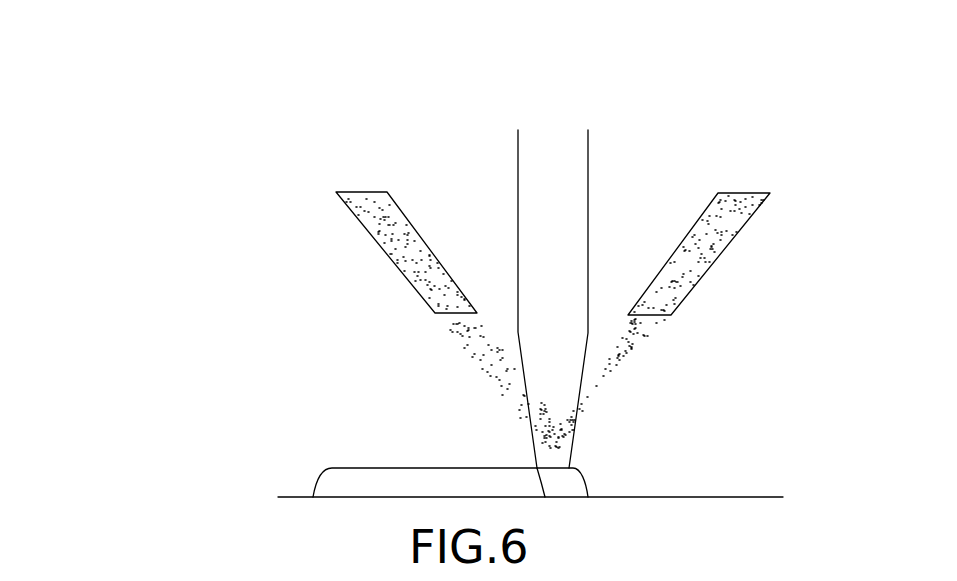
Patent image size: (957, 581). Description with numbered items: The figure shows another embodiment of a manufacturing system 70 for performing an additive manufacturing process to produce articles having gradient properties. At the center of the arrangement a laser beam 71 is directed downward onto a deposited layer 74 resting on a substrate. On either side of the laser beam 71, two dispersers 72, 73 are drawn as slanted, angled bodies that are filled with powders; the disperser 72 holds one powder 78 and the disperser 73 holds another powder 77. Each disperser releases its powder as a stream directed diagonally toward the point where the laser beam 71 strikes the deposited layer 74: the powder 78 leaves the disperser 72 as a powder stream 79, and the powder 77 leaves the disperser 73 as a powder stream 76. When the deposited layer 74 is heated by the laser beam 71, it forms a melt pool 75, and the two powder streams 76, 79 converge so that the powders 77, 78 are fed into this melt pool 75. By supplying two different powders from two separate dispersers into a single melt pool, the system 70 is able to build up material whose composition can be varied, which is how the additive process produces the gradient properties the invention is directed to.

The manufacturing system 70 is at (117, 177).
The laser beam 71 is at (565, 135).
The disperser 72 is at (356, 205).
The disperser 73 is at (749, 203).
The deposited layer 74 is at (336, 482).
The melt pool 75 is at (567, 483).
The powder stream 76 is at (614, 375).
The powder 77 is at (687, 286).
The powder 78 is at (421, 287).
The powder stream 79 is at (493, 375).